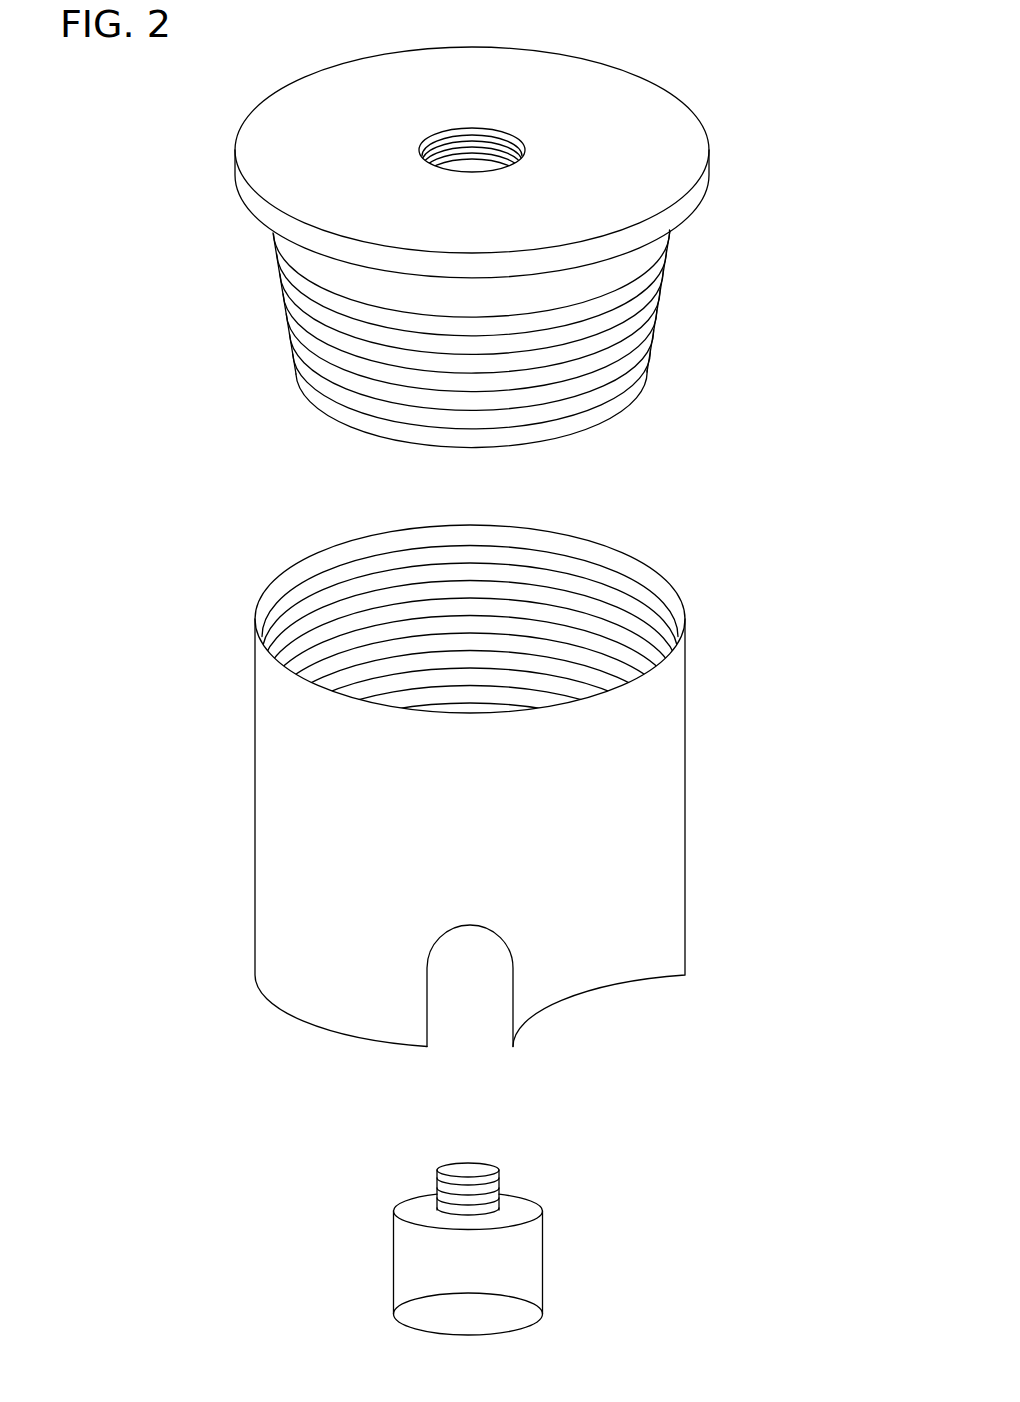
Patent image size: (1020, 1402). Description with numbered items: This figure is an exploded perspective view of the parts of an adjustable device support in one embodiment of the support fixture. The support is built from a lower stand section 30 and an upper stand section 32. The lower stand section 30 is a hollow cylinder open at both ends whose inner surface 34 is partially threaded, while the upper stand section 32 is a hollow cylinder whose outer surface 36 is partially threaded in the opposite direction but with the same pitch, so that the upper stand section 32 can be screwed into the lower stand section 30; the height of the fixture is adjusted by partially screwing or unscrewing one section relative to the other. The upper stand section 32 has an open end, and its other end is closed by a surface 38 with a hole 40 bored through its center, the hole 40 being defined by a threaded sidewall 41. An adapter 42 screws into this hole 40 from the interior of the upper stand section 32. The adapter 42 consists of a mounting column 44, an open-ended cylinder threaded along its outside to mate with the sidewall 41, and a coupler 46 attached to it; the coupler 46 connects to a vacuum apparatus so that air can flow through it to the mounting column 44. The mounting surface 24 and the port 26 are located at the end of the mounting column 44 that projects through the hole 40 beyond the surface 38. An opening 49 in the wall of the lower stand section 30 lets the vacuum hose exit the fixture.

The mounting surface 24 is at (483, 1163).
The port 26 is at (460, 1171).
The lower stand section 30 is at (692, 748).
The upper stand section 32 is at (668, 294).
The inner surface 34 is at (522, 552).
The outer surface 36 is at (283, 325).
The surface 38 is at (596, 62).
The hole 40 is at (528, 152).
The threaded sidewall 41 is at (437, 155).
The adapter 42 is at (557, 1263).
The mounting column 44 is at (430, 1184).
The coupler 46 is at (394, 1256).
The opening 49 is at (473, 977).